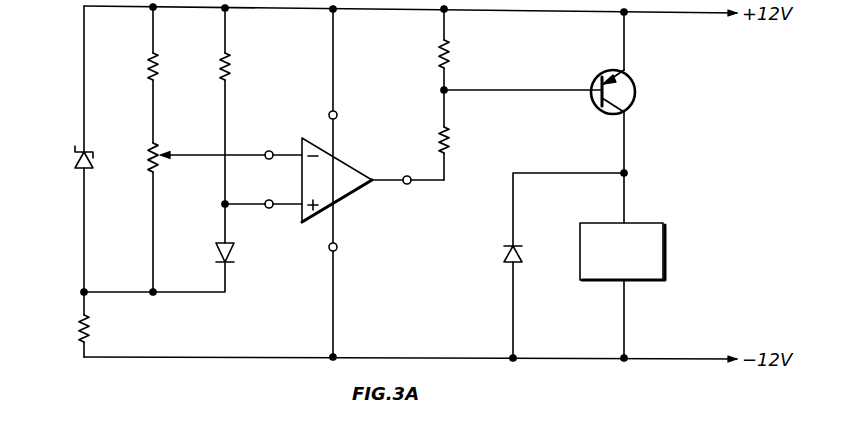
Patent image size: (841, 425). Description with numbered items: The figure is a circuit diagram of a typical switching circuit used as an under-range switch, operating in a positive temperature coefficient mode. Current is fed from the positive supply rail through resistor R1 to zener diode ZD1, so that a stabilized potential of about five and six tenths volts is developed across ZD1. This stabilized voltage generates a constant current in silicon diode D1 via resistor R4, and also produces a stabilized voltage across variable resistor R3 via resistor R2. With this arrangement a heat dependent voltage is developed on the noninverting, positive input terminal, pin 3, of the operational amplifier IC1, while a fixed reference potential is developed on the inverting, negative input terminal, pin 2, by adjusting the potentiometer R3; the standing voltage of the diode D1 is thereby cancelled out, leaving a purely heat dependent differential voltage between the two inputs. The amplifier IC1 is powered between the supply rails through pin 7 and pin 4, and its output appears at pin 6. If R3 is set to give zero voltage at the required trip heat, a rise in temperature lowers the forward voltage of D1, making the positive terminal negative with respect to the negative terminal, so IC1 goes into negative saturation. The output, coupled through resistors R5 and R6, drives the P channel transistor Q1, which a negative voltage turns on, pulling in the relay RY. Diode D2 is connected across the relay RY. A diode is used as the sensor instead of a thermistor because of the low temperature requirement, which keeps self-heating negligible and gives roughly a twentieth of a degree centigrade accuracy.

The resistor R1 is at (90, 327).
The resistor R2 is at (160, 64).
The variable resistor R3 is at (148, 146).
The resistor R4 is at (232, 64).
The resistor R5 is at (452, 62).
The resistor R6 is at (452, 146).
The zener diode ZD1 is at (79, 171).
The silicon diode D1 is at (233, 250).
The diode D2 is at (505, 255).
The operational amplifier IC1 is at (342, 172).
The P channel transistor Q1 is at (628, 87).
The relay RY is at (622, 292).
The IC1 inverting input pin 2 is at (283, 144).
The IC1 non-inverting input pin 3 is at (283, 193).
The IC1 negative supply pin 4 is at (340, 249).
The IC1 output pin 6 is at (408, 169).
The IC1 positive supply pin 7 is at (340, 113).